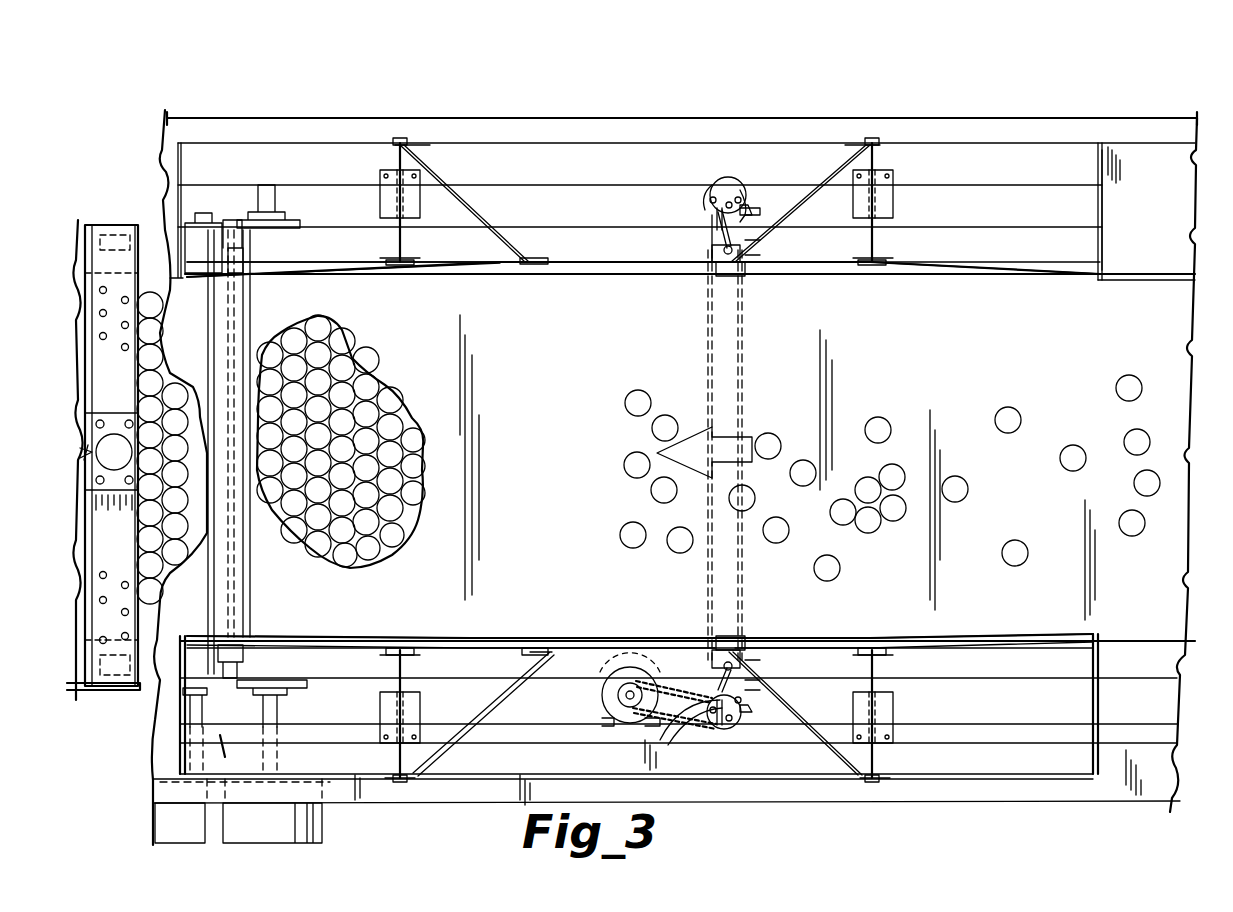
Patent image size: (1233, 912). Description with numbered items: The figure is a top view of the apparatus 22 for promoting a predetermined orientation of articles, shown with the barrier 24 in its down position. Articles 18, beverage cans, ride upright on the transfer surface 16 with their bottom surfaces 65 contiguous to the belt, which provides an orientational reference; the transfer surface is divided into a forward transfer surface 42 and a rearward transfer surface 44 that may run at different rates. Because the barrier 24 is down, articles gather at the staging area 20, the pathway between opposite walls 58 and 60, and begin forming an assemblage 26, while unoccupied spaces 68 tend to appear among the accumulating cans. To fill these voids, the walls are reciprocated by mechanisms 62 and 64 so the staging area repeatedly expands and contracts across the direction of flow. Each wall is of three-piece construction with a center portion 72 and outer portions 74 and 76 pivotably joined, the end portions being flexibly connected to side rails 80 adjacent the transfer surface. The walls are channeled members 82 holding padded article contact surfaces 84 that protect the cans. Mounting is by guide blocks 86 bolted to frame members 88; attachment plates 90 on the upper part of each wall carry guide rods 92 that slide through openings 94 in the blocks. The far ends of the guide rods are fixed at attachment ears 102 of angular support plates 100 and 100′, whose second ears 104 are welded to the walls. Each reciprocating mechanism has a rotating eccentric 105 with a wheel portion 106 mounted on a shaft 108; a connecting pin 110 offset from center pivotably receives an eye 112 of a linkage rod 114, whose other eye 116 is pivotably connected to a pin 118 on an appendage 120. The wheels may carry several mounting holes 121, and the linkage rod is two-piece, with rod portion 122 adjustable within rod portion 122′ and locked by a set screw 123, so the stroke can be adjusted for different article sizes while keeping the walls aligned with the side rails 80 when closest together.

The transfer surface 16 is at (1140, 356).
The articles 18 is at (860, 475).
The staging area 20 is at (722, 433).
The apparatus 22 is at (905, 135).
The barrier 24 is at (100, 235).
The assemblage of articles 26 is at (178, 405).
The forward transfer surface 42 is at (200, 258).
The rearward transfer surface 44 is at (250, 250).
The wall 58 is at (600, 660).
The wall 60 is at (585, 262).
The reciprocating mechanism 62 is at (700, 730).
The reciprocating mechanism 64 is at (728, 178).
The bottom surface 65 is at (915, 475).
The unoccupied spaces 68 is at (345, 385).
The center portion 72 is at (615, 272).
The outer portion 74 is at (318, 272).
The outer portion 76 is at (1045, 272).
The side rails 80 is at (178, 225).
The channeled members 82 is at (820, 262).
The padded article contact surfaces 84 is at (612, 285).
The mounting blocks 86 is at (380, 185).
The frame members 88 is at (925, 185).
The attachment plates 90 is at (385, 262).
The guide rods 92 is at (380, 165).
The opening 94 is at (385, 222).
The angular support plate 100 is at (840, 160).
The angular support plate 100′ is at (440, 175).
The attachment ears 102 is at (400, 140).
The second ears 104 is at (525, 258).
The rotating eccentrics 105 is at (705, 195).
The wheel portions 106 is at (740, 190).
The shafts 108 is at (715, 178).
The connecting pins 110 is at (710, 212).
The eyes 112 is at (742, 200).
The linkage rods 114 is at (740, 252).
The eyes 116 is at (742, 262).
The pins 118 is at (738, 300).
The appendages 120 is at (708, 280).
The mounting holes 121 is at (742, 212).
The rod portion 122 is at (712, 218).
The rod portion 122′ is at (712, 248).
The set screw 123 is at (712, 255).